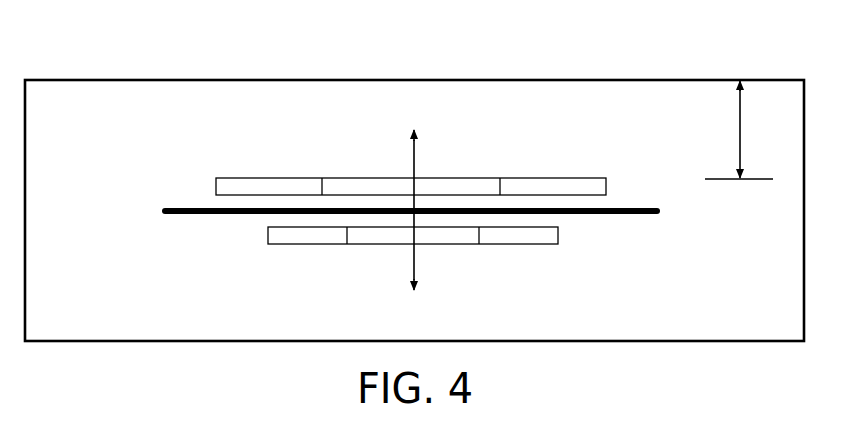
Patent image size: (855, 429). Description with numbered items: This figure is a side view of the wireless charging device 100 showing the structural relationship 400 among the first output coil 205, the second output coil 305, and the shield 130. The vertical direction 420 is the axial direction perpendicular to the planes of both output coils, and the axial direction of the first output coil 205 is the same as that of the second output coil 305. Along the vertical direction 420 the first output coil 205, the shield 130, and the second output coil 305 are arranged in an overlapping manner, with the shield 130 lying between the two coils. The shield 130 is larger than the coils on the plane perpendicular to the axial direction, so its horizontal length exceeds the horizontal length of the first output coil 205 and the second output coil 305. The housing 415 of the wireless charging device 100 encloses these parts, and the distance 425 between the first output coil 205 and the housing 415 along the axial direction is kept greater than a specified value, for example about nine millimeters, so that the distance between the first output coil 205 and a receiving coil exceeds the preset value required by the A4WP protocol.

The structural relationship 400 is at (228, 60).
The wireless charging device 100 is at (414, 186).
The housing 415 is at (554, 76).
The first output coil 205 is at (219, 170).
The second output coil 305 is at (259, 236).
The shield 130 is at (612, 220).
The vertical direction 420 is at (448, 192).
The distance between housing and shield 425 is at (731, 130).